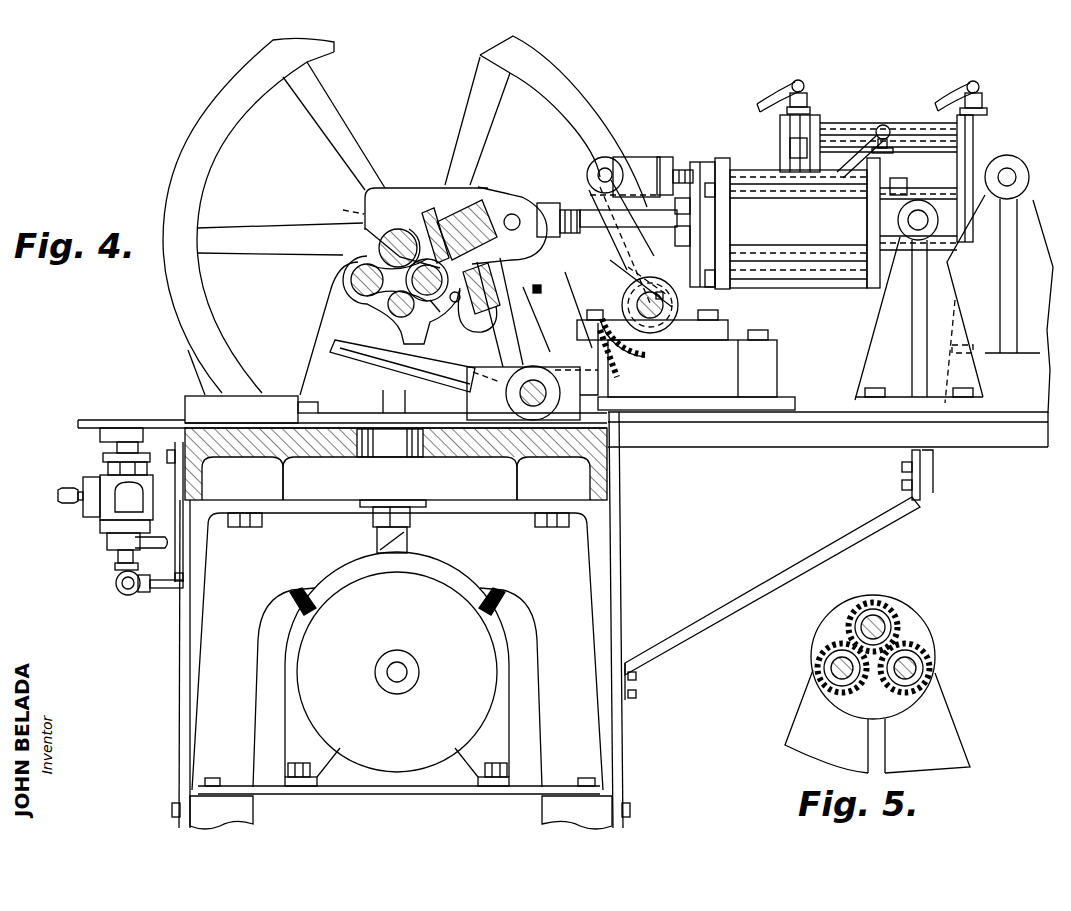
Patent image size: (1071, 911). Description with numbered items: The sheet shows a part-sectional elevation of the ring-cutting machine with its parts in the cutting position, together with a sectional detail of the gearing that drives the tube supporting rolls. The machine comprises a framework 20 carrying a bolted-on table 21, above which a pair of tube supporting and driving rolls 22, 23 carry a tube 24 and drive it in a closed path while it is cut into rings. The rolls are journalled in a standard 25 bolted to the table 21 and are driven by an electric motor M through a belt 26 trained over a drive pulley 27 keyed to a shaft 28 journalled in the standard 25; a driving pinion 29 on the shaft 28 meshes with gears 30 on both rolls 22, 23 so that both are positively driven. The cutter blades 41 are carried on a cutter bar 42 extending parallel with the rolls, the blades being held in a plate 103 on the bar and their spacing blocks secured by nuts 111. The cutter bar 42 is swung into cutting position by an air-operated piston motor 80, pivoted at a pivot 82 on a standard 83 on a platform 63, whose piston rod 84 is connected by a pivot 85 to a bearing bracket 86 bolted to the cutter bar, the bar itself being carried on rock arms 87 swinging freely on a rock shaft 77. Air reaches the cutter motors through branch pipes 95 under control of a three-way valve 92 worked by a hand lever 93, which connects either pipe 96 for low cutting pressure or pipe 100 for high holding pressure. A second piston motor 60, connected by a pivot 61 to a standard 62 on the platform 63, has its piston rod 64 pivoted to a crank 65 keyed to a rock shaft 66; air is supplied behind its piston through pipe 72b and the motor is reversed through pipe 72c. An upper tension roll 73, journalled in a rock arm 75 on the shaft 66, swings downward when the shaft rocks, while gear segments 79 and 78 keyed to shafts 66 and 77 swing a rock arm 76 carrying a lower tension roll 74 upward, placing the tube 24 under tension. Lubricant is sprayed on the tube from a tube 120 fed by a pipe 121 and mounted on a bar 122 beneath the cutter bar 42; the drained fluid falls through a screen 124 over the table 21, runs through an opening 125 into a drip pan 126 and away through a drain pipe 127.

In FIG. 4, the framework 20 is at (605, 549).
In FIG. 4, the table 21 is at (606, 466).
In FIG. 4, the tube supporting and driving roll 22 is at (351, 281).
In FIG. 5, the tube supporting and driving roll 22 is at (838, 668).
In FIG. 4, the tube supporting and driving roll 23 is at (442, 314).
In FIG. 5, the tube supporting and driving roll 23 is at (912, 668).
In FIG. 4, the tube 24 is at (379, 250).
In FIG. 4, the standard 25 is at (323, 330).
In FIG. 5, the standard 25 is at (945, 715).
In FIG. 4, the belt 26 is at (290, 603).
In FIG. 4, the drive pulley 27 is at (214, 102).
In FIG. 4, the shaft 28 is at (340, 208).
In FIG. 5, the shaft 28 is at (880, 627).
In FIG. 5, the driving pinion 29 is at (880, 600).
In FIG. 5, the gears 30 is at (825, 655).
In FIG. 4, the blades 41 is at (407, 280).
In FIG. 4, the cutter bar 42 is at (460, 215).
In FIG. 4, the air-operated piston motor 60 is at (862, 128).
In FIG. 4, the pivot 61 is at (1010, 176).
In FIG. 4, the standard 62 is at (1025, 197).
In FIG. 4, the platform 63 is at (828, 410).
In FIG. 4, the piston rod 64 is at (683, 168).
In FIG. 4, the crank 65 is at (590, 190).
In FIG. 4, the rock shaft 66 is at (678, 310).
In FIG. 4, the pipe 72c is at (790, 95).
In FIG. 4, the pipe 72b is at (940, 95).
In FIG. 4, the upper tension roll 73 is at (411, 228).
In FIG. 4, the lower tension roll 74 is at (400, 314).
In FIG. 4, the rock arm 75 is at (404, 186).
In FIG. 4, the rock arm 76 is at (382, 345).
In FIG. 4, the rock shaft 77 is at (548, 403).
In FIG. 4, the gear segment 78 is at (615, 372).
In FIG. 4, the gear segment 79 is at (642, 358).
In FIG. 4, the air-operated piston motor 80 is at (838, 265).
In FIG. 4, the pivot 82 is at (908, 220).
In FIG. 4, the standard 83 is at (886, 318).
In FIG. 4, the piston rods 84 is at (637, 220).
In FIG. 4, the pivots 85 is at (516, 214).
In FIG. 4, the bearing brackets 86 is at (498, 200).
In FIG. 4, the rock arms 87 is at (596, 306).
In FIG. 4, the three-way valve 92 is at (110, 468).
In FIG. 4, the hand lever 93 is at (108, 437).
In FIG. 4, the branch pipes 95 is at (162, 586).
In FIG. 4, the pipe 96 is at (68, 500).
In FIG. 4, the pipe 100 is at (164, 536).
In FIG. 4, the plate 103 is at (432, 223).
In FIG. 4, the sleeve or nut 111 is at (514, 250).
In FIG. 4, the tube 120 is at (455, 303).
In FIG. 4, the pipe 121 is at (492, 326).
In FIG. 4, the bar 122 is at (494, 312).
In FIG. 4, the screen 124 is at (345, 428).
In FIG. 4, the opening 125 is at (404, 447).
In FIG. 4, the drip pan 126 is at (340, 500).
In FIG. 4, the drain pipe 127 is at (410, 538).